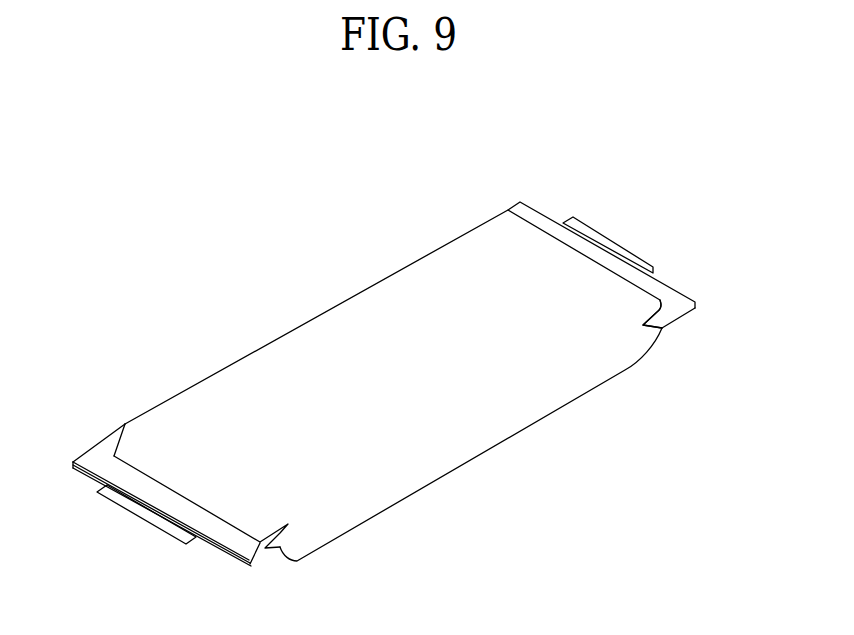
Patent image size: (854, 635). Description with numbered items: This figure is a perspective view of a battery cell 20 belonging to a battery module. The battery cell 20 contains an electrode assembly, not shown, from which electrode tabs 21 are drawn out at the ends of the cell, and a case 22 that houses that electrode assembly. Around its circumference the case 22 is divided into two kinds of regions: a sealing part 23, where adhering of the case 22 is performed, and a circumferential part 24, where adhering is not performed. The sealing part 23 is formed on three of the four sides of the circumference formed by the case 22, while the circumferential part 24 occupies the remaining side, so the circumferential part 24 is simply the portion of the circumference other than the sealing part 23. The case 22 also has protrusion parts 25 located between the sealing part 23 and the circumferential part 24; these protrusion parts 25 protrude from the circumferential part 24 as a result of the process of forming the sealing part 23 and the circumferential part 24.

The battery cell 20 is at (72, 156).
The electrode tabs 21 is at (147, 512).
The case 22 is at (348, 324).
The sealing part 23 is at (97, 457).
The circumferential part 24 is at (480, 430).
The protrusion parts 25 is at (667, 313).